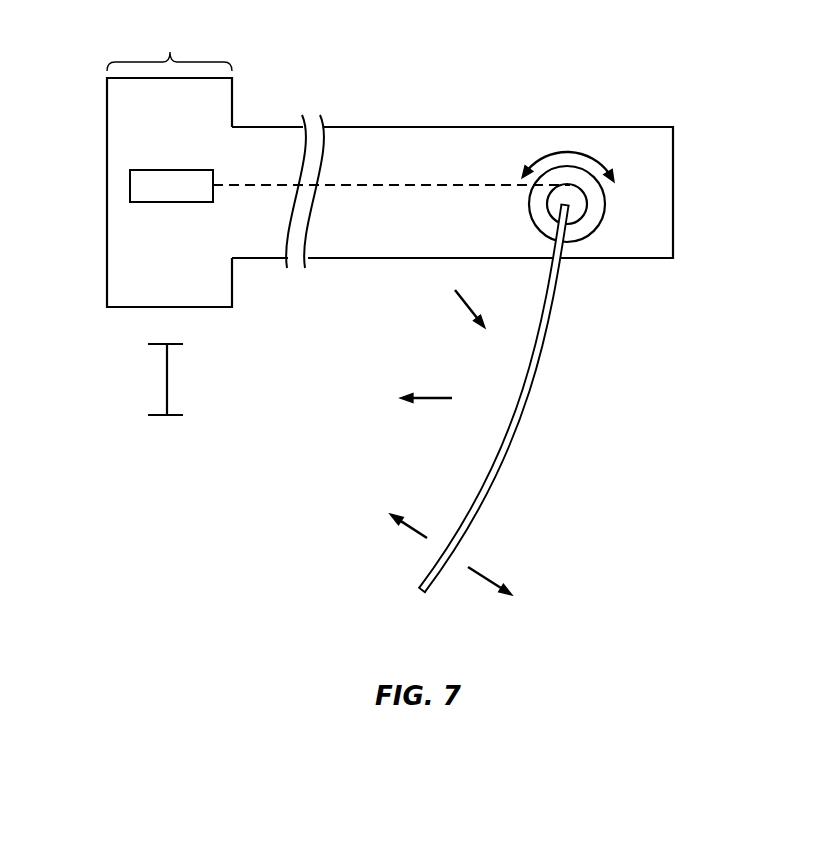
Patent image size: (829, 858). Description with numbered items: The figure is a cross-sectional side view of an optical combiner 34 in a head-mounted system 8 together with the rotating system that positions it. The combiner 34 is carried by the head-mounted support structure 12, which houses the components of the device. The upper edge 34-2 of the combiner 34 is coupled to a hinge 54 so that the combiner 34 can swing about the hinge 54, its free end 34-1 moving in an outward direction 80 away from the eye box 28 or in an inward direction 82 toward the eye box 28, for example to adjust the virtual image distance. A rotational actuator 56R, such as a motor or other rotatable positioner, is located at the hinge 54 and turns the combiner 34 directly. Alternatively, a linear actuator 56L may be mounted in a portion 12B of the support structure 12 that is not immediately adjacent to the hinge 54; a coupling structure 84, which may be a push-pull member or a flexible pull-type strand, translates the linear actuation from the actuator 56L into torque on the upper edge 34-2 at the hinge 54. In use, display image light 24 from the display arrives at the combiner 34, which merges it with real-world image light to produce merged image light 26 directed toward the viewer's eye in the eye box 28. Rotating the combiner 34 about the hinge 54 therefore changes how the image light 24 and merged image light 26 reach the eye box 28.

The system 8 is at (720, 239).
The support structure 12 is at (420, 129).
The housing portion 12B is at (169, 52).
The image light 24 is at (461, 303).
The merged image light 26 is at (438, 399).
The eye box 28 is at (173, 418).
The optical combiner 34 is at (523, 425).
The first end of arm 34-1 is at (418, 588).
The upper edge 34-2 is at (548, 233).
The hinge 54 is at (587, 215).
The linear actuator 56L is at (130, 192).
The rotational actuator 56R is at (568, 166).
The outward direction 80 is at (485, 582).
The inward direction 82 is at (417, 531).
The coupling structure 84 is at (378, 187).